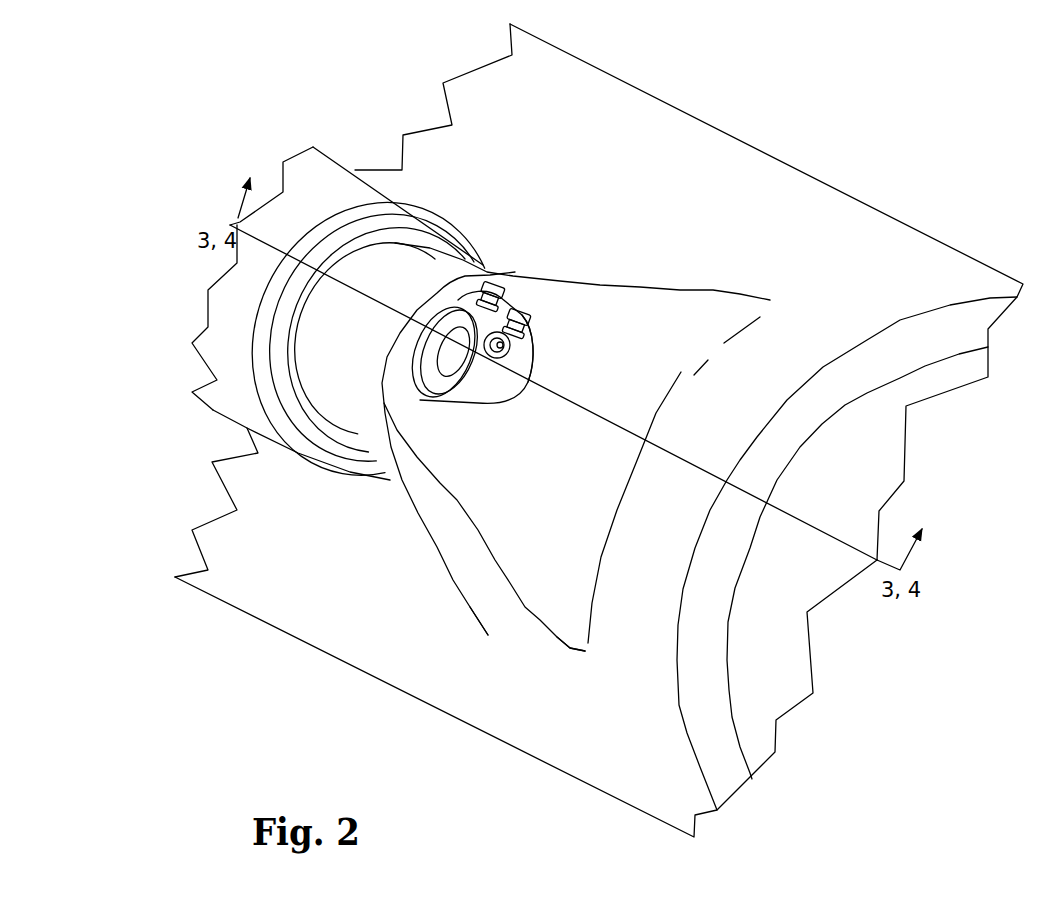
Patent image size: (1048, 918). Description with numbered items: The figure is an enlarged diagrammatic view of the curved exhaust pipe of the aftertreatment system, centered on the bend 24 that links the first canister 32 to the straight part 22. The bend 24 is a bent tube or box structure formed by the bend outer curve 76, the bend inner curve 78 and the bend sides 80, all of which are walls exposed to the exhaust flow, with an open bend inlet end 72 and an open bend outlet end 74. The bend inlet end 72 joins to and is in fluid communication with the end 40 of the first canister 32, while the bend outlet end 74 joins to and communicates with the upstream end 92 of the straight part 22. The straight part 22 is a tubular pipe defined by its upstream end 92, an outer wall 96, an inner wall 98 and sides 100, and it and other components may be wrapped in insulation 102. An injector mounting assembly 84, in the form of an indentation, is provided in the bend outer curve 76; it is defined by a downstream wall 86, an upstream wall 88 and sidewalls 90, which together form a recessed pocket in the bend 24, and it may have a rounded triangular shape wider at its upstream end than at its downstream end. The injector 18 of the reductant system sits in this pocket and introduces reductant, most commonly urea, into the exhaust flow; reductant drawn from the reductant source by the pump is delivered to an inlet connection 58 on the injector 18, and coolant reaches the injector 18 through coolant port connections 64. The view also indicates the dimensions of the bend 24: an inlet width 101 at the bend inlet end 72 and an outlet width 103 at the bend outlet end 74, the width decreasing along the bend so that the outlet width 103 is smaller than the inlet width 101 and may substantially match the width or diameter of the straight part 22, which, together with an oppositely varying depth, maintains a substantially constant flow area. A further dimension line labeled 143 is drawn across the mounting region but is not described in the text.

The injector 18 is at (505, 325).
The straight part 22 is at (302, 167).
The bend 24 is at (533, 595).
The first canister 32 is at (715, 147).
The end 40 is at (627, 802).
The inlet connection 58 is at (511, 345).
The coolant port connections 64 is at (505, 290).
The bend inlet end 72 is at (587, 648).
The bend outlet end 74 is at (323, 420).
The bend outer curve 76 is at (712, 292).
The bend inner curve 78 is at (388, 482).
The bend sides 80 is at (655, 280).
The injector mounting assembly 84 is at (504, 408).
The downstream wall 86 is at (422, 382).
The upstream wall 88 is at (523, 392).
The sidewalls 90 is at (505, 305).
The upstream end 92 is at (233, 412).
The outer wall 96 is at (313, 217).
The inner wall 98 is at (275, 455).
The sides 100 is at (375, 172).
The inlet width 101 is at (674, 480).
The insulation 102 is at (443, 210).
The outlet width 103 is at (427, 253).
The hub diameter 143 is at (460, 300).